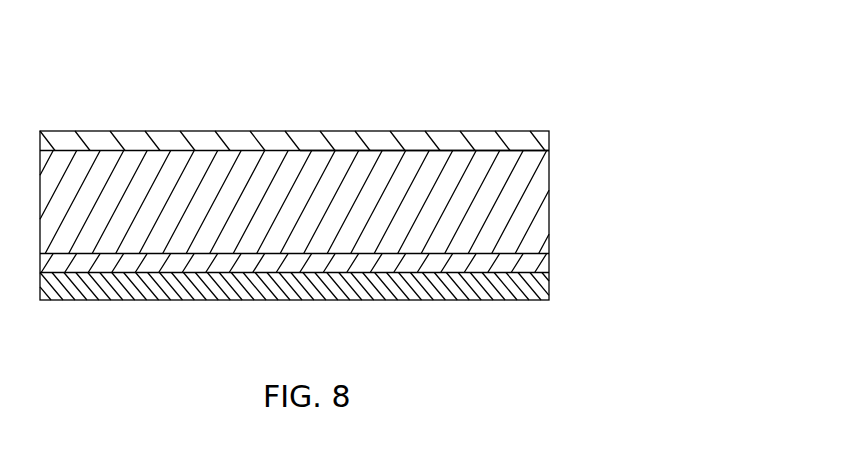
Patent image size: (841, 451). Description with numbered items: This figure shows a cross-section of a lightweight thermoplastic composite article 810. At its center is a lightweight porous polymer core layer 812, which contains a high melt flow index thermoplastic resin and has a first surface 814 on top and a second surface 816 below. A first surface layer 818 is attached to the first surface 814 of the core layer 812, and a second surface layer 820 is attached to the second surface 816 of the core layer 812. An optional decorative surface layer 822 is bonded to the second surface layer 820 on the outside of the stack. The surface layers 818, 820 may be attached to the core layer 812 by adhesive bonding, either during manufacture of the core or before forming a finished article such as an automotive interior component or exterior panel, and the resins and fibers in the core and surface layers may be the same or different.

The lightweight composite article 810 is at (651, 128).
The porous polymer core layer 812 is at (549, 208).
The first surface 814 is at (530, 152).
The second surface 816 is at (503, 253).
The first surface layer 818 is at (503, 131).
The second surface layer 820 is at (515, 264).
The decorative surface layer 822 is at (522, 300).